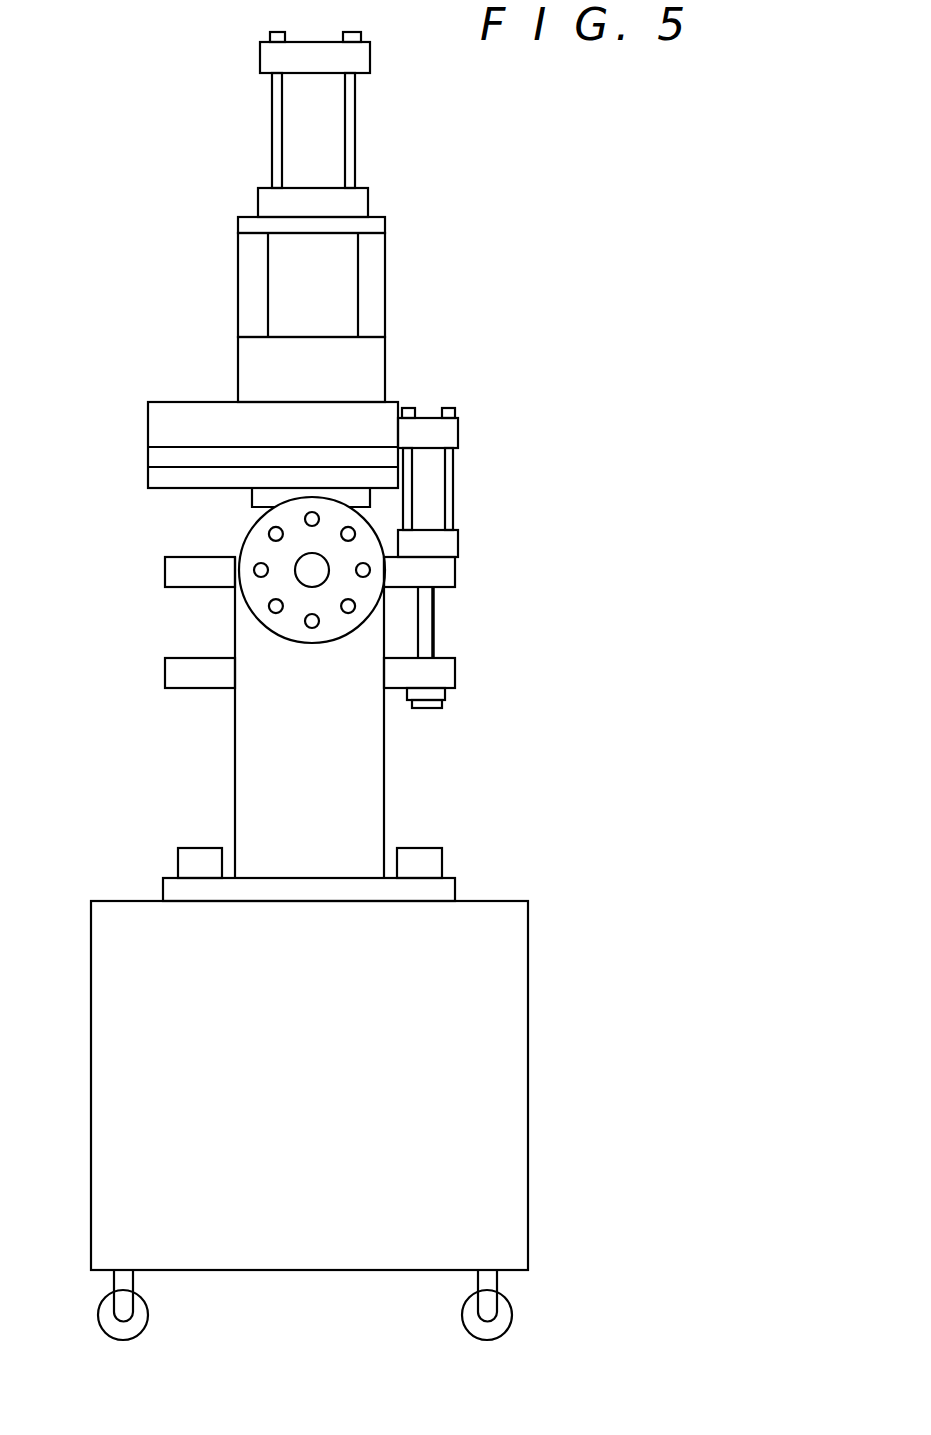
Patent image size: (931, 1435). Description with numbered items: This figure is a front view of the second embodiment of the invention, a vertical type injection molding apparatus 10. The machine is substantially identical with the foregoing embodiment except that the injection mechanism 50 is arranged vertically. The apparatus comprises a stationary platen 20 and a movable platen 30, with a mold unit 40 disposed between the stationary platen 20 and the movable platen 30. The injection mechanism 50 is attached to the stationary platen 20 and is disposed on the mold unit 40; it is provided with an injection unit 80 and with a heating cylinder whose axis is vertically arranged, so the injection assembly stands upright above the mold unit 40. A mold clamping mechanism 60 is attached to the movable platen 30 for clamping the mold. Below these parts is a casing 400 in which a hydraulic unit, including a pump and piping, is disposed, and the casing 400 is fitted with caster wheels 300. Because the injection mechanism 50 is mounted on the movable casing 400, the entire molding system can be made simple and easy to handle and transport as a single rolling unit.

The injection molding apparatus 10 is at (503, 365).
The stationary platen 20 is at (168, 575).
The movable platen 30 is at (165, 673).
The mold unit 40 is at (395, 623).
The injection mechanism 50 is at (222, 535).
The mold clamping mechanism 60 is at (443, 627).
The injection unit 80 is at (223, 215).
The caster wheels 300 is at (142, 1318).
The casing 400 is at (477, 935).